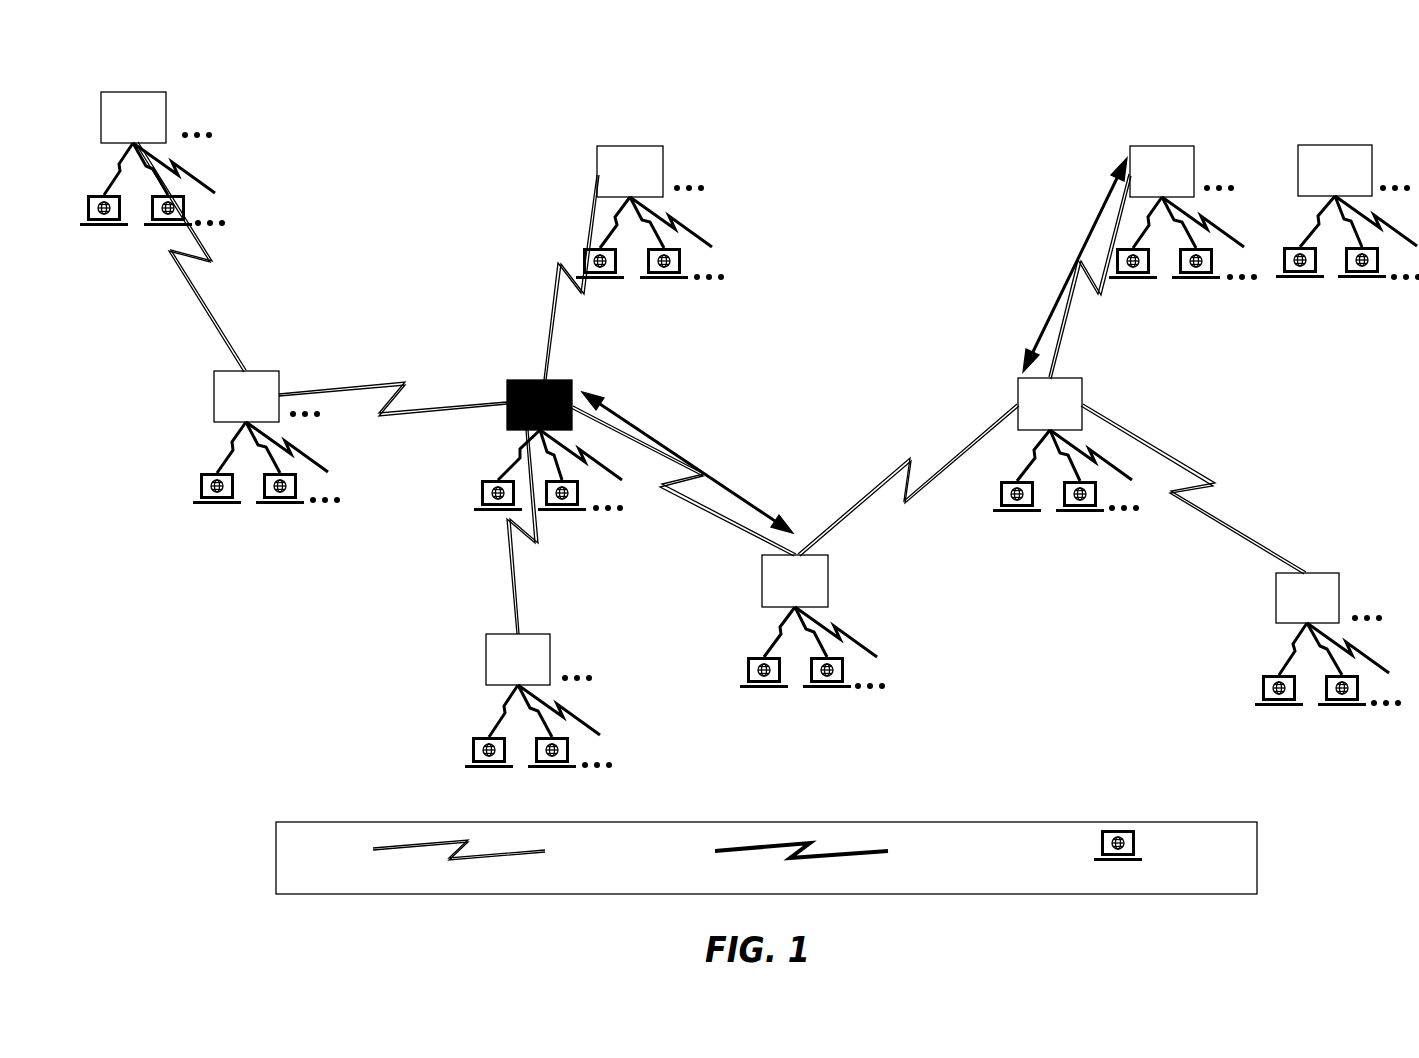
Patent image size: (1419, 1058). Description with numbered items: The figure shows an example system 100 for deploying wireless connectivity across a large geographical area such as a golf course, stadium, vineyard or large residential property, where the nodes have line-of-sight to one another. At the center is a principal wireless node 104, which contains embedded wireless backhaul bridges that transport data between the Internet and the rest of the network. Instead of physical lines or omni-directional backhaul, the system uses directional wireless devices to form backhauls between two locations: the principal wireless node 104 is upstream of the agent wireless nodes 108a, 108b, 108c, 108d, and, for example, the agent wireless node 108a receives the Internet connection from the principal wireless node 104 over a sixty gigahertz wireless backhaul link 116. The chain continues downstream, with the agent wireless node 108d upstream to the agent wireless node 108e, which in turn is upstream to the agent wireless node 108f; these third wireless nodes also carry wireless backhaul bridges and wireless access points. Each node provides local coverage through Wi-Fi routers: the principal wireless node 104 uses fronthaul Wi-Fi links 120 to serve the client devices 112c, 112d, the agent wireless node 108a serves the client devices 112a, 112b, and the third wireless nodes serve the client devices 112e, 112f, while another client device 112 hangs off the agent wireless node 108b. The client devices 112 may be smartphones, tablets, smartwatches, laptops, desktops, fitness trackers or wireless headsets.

The system 100 is at (978, 108).
The principal wireless node 104 is at (539, 405).
The agent wireless node 108a is at (650, 171).
The agent wireless node 108b is at (539, 659).
The agent wireless node 108c is at (267, 396).
The agent wireless node 108d is at (795, 581).
The agent wireless node 108e is at (1050, 404).
The agent wireless node 108f is at (1182, 171).
The client devices 112 is at (475, 770).
The client device 112a is at (598, 280).
The client device 112b is at (665, 280).
The client device 112c is at (490, 514).
The client device 112d is at (570, 514).
The client device 112e is at (1010, 512).
The client device 112f is at (1075, 512).
The 60 GHz wireless backhaul link 116 is at (395, 392).
The fronthaul Wi-Fi links 120 is at (518, 455).